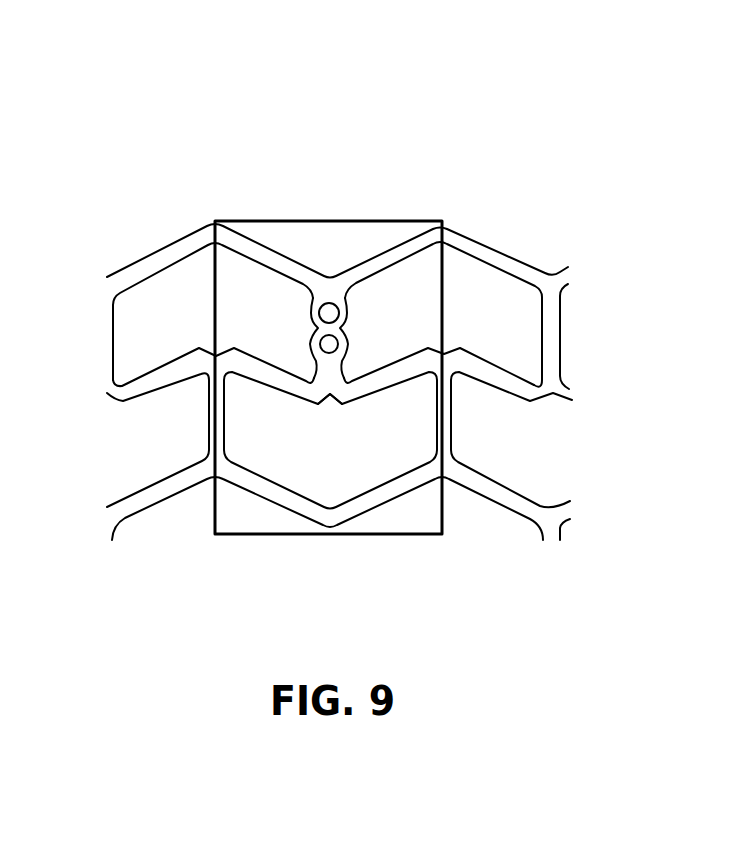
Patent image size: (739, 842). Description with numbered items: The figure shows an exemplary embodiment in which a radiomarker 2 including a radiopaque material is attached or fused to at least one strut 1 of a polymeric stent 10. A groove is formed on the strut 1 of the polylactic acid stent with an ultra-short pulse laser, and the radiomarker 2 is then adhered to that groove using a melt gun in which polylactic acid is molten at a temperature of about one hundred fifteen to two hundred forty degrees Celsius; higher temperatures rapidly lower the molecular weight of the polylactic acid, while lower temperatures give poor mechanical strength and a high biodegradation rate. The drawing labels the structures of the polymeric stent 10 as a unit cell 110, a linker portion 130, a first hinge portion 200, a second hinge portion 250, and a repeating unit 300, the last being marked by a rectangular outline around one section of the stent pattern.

The polymeric stent 10 is at (178, 56).
The strut 1 is at (277, 252).
The radiomarker 2 is at (338, 305).
The unit cell 110 is at (133, 332).
The linker portion 130 is at (565, 338).
The first hinge portion 200 is at (327, 285).
The second hinge portion 250 is at (327, 390).
The repeating unit 300 is at (388, 537).